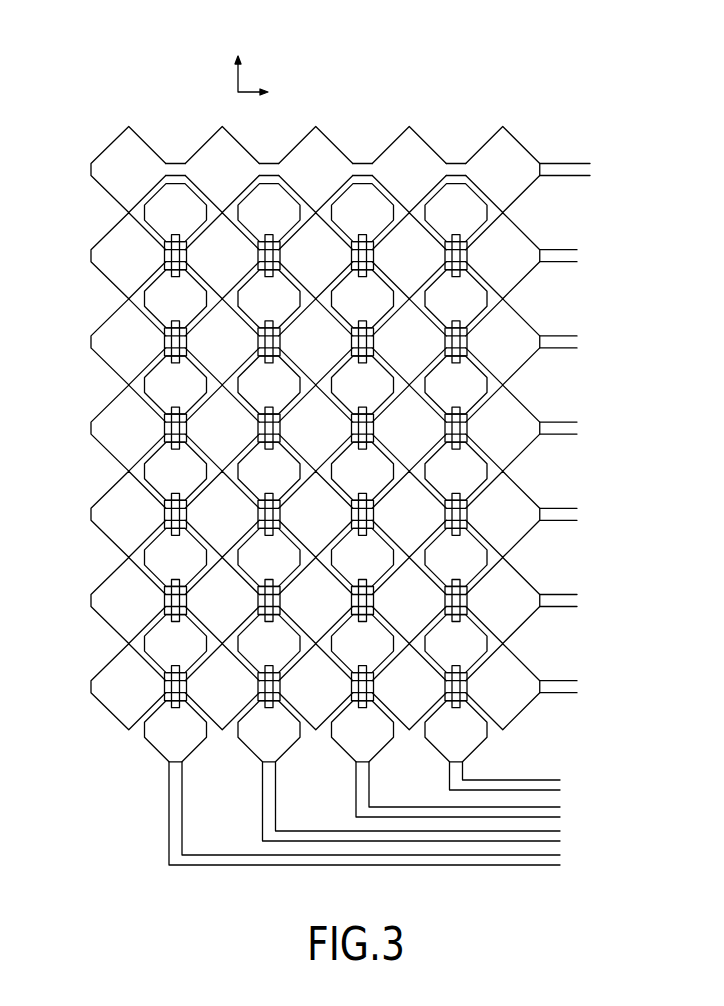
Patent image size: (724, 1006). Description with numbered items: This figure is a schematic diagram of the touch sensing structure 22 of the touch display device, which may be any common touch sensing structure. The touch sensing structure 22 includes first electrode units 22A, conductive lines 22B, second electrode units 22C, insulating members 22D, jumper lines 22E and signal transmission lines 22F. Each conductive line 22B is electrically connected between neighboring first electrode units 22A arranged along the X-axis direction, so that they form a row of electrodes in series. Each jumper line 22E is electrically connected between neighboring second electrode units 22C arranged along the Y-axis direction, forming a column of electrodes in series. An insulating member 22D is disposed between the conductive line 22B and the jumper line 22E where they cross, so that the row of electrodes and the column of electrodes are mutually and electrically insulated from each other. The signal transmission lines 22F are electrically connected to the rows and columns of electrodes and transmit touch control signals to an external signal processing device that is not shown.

The touch sensing structure 22 is at (67, 92).
The first electrode unit 22A is at (403, 148).
The conductive line 22B is at (453, 160).
The second electrode unit 22C is at (461, 196).
The insulating member 22D is at (468, 242).
The jumper line 22E is at (468, 267).
The signal transmission line 22F is at (563, 517).